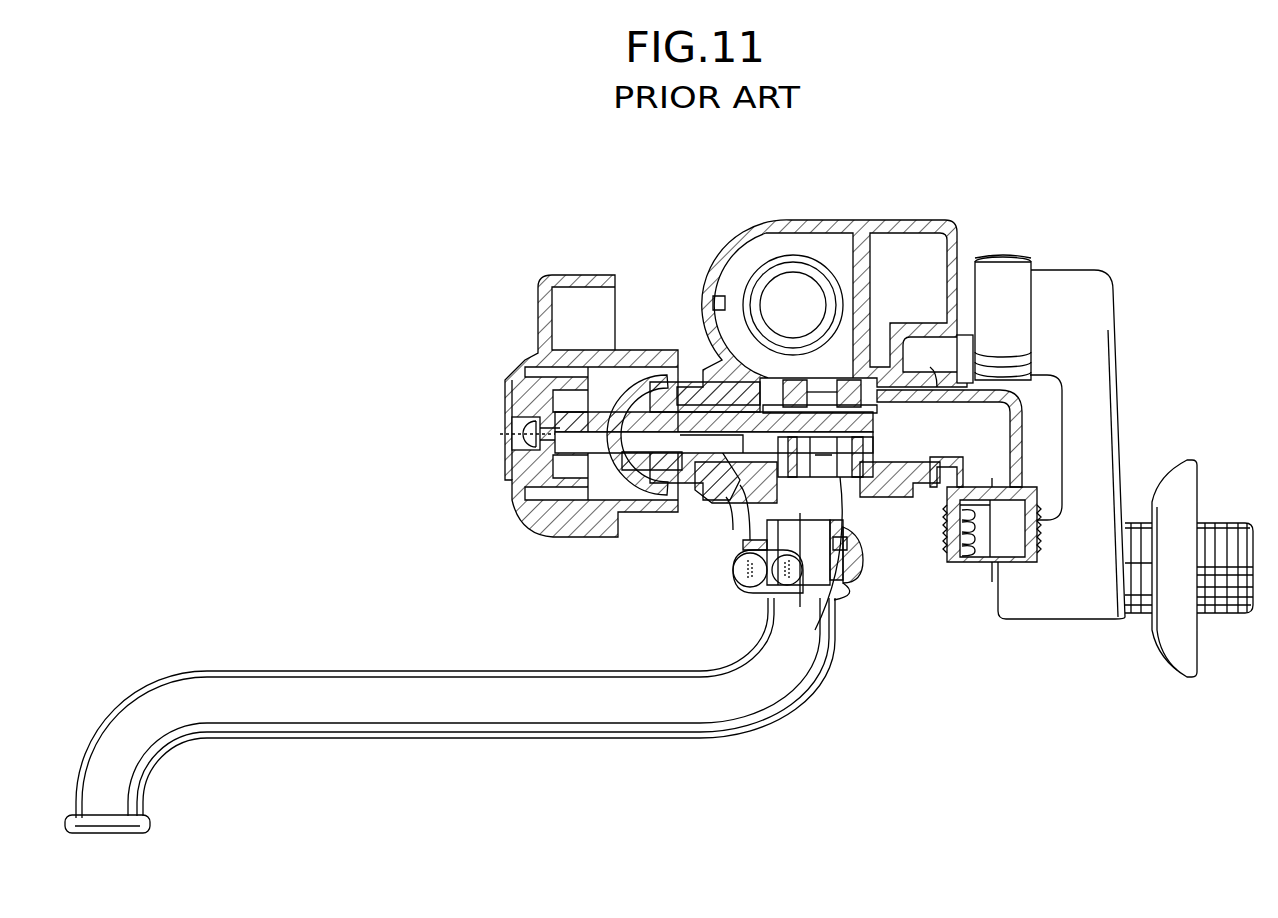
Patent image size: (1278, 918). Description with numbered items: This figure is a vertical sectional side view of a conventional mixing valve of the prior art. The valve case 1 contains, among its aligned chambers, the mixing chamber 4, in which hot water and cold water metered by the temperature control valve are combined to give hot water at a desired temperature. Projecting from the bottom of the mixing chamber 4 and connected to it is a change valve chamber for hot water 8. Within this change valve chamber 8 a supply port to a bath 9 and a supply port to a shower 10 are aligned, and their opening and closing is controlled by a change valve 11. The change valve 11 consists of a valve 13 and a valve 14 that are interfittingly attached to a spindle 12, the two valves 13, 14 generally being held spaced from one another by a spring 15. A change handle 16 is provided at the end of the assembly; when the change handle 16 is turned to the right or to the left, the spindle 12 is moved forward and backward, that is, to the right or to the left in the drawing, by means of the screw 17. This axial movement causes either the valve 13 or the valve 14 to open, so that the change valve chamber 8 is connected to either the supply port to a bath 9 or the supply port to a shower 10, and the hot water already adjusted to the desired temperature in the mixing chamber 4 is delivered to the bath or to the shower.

The valve case 1 is at (845, 219).
The mixing chamber 4 is at (808, 245).
The change valve chamber for hot water 8 is at (843, 505).
The supply port to a bath 9 is at (773, 465).
The supply port to a shower 10 is at (990, 403).
The change valve 11 is at (835, 633).
The spindle 12 is at (603, 440).
The valve 13 is at (772, 505).
The valve 14 is at (817, 474).
The spring 15 is at (822, 390).
The change handle 16 is at (508, 392).
The screw 17 is at (658, 380).